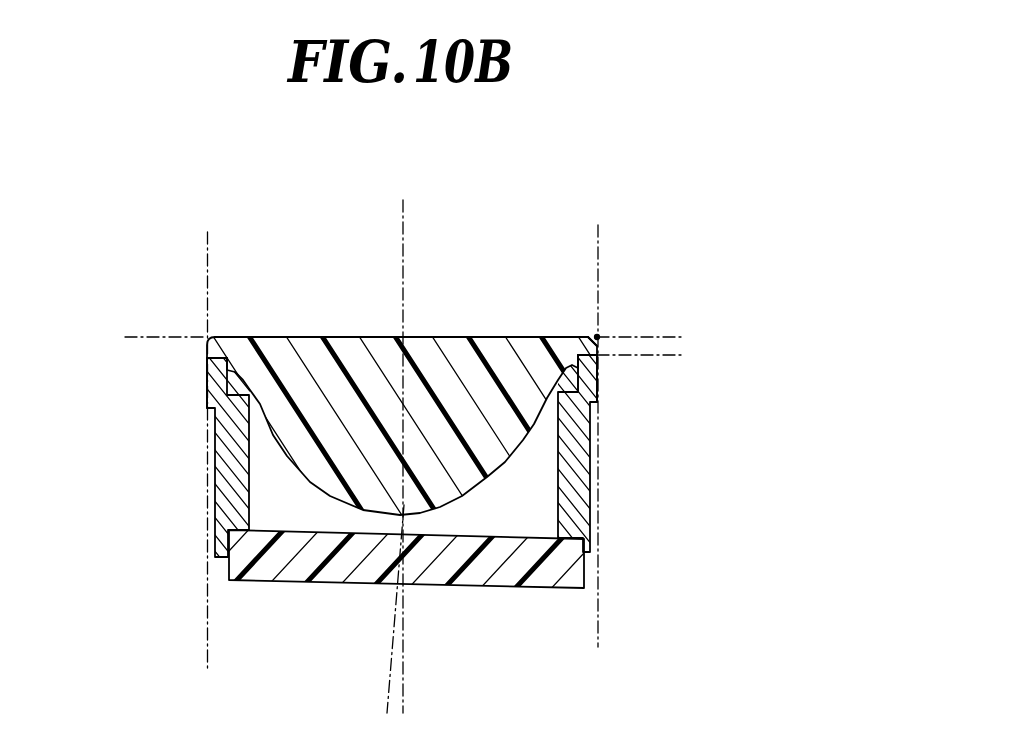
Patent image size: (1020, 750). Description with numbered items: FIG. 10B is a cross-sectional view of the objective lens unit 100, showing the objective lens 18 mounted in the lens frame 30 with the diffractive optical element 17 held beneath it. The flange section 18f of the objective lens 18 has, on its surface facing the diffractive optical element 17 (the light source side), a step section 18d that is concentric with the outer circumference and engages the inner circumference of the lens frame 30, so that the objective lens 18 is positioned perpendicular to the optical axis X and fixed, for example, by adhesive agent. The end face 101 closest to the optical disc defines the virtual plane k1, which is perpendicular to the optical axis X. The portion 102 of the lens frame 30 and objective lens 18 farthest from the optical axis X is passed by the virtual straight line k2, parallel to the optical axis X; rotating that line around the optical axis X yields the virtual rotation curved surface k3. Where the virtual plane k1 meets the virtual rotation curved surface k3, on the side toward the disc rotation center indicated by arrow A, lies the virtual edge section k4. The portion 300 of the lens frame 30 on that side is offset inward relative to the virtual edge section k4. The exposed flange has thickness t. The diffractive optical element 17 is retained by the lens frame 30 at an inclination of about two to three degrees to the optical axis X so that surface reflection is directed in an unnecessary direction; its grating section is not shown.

The objective lens 18 is at (445, 355).
The step section 18d is at (573, 357).
The flange section 18f is at (587, 343).
The objective lens unit 100 is at (285, 318).
The end face 101 is at (373, 337).
The portion farthest from the optical axis 102 is at (205, 398).
The portion of the lens frame 300 is at (600, 356).
The lens frame 30 is at (582, 498).
The diffractive optical element 17 is at (465, 577).
The virtual plane k1 is at (165, 338).
The virtual edge section k4 is at (599, 335).
The virtual straight line k2 is at (205, 615).
The virtual rotation curved surface k3 is at (602, 633).
The optical axis X is at (404, 225).
The thickness of the exposed flange section t is at (660, 307).
The arrow indicating direction of the disc rotation center A is at (660, 243).